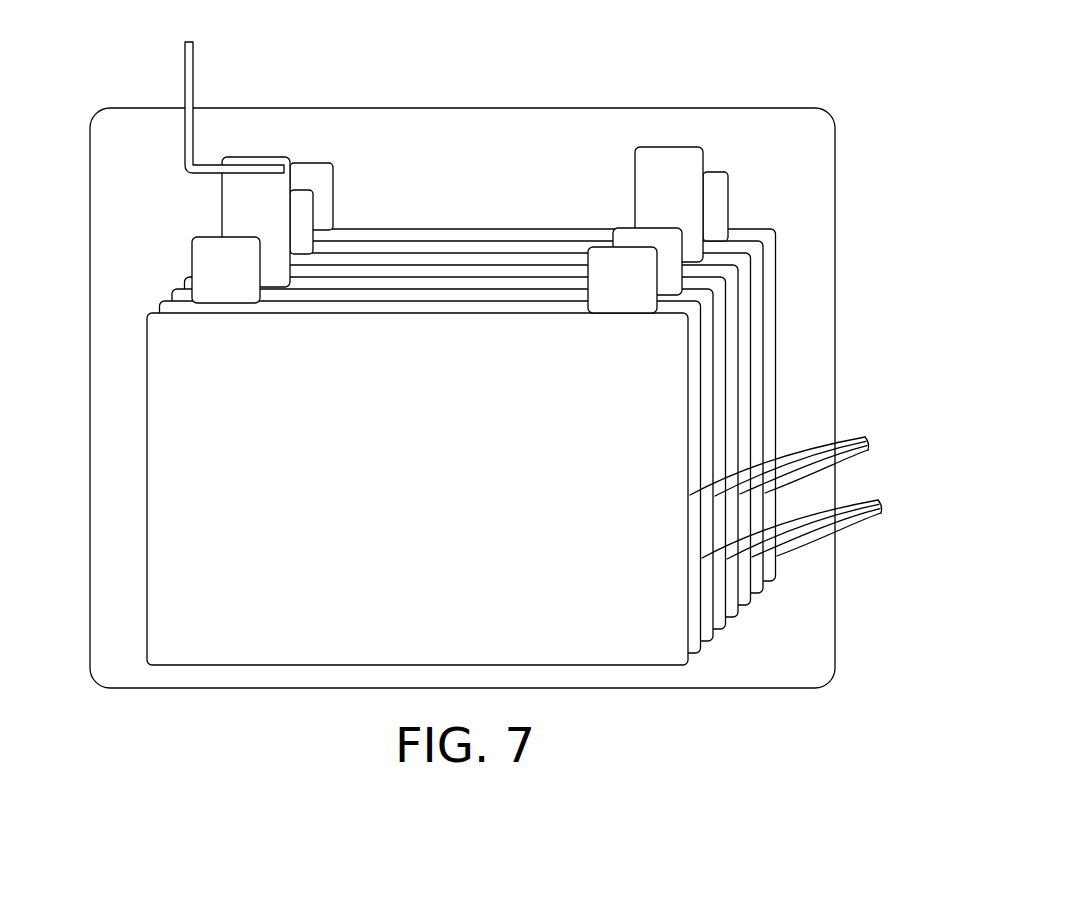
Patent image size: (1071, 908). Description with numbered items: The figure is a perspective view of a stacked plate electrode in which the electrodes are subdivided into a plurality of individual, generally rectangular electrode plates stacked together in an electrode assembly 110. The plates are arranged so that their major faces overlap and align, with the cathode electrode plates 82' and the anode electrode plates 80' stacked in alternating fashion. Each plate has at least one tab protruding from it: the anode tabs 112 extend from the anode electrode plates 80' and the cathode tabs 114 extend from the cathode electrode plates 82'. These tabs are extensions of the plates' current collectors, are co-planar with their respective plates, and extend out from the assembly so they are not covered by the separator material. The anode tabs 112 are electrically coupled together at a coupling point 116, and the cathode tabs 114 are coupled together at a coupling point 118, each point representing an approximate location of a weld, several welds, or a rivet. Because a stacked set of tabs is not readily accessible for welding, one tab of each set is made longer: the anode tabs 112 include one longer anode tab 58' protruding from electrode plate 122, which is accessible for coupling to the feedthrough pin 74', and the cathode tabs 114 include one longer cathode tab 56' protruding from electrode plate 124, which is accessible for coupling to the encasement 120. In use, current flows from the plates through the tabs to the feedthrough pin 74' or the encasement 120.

The feedthrough pin 74' is at (203, 89).
The longer anode tab 58' is at (269, 166).
The electrode plate 122 is at (355, 277).
The longer cathode tab 56' is at (688, 147).
The cathode tabs 114 is at (660, 275).
The electrode plate 124 is at (777, 290).
The encasement 120 is at (837, 315).
The electrode assembly 110 is at (491, 335).
The anode tabs 112 is at (307, 183).
The coupling point 116 is at (230, 263).
The coupling point 118 is at (603, 283).
The cathode electrode plate 82' is at (814, 463).
The anode electrode plate 80' is at (827, 528).